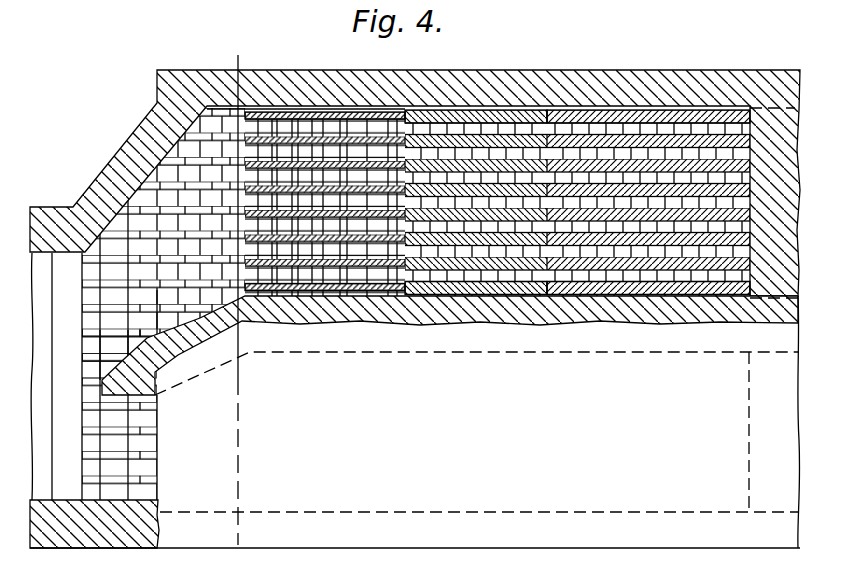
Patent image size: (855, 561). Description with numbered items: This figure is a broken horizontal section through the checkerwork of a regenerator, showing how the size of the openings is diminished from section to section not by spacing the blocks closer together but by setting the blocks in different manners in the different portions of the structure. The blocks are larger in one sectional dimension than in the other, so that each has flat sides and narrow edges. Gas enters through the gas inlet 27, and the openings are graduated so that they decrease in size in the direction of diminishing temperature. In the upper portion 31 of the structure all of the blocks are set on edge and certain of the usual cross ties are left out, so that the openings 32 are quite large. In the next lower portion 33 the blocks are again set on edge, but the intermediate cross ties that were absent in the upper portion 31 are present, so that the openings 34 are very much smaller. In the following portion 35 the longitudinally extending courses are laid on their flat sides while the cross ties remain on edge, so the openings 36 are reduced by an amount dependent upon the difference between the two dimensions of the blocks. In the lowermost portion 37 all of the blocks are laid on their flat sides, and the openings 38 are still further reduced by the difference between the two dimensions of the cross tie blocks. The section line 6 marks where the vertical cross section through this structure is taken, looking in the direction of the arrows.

The section line 6— 6 is at (226, 540).
The gas inlet 27 is at (94, 400).
The upper portion of the structure 31 is at (194, 182).
The openings 32 is at (158, 292).
The next lower portion of the structure 33 is at (329, 130).
The openings 34 is at (330, 265).
The next lower portion of the structure 35 is at (495, 129).
The openings 36 is at (450, 272).
The lowermost portion of the structure 37 is at (650, 129).
The openings 38 is at (588, 272).